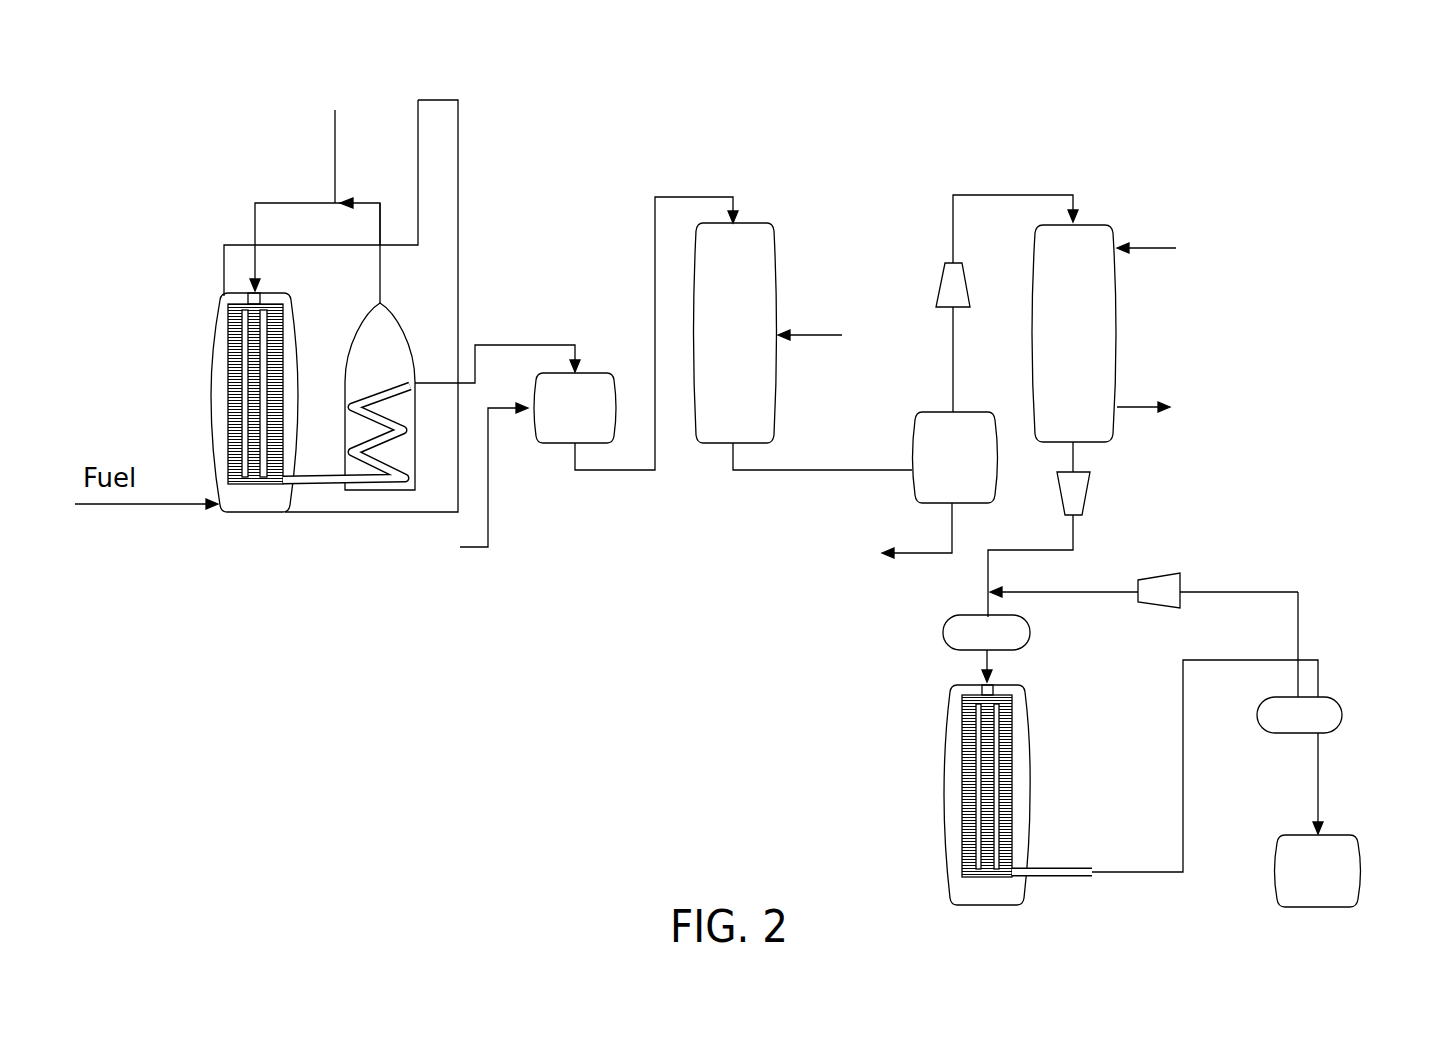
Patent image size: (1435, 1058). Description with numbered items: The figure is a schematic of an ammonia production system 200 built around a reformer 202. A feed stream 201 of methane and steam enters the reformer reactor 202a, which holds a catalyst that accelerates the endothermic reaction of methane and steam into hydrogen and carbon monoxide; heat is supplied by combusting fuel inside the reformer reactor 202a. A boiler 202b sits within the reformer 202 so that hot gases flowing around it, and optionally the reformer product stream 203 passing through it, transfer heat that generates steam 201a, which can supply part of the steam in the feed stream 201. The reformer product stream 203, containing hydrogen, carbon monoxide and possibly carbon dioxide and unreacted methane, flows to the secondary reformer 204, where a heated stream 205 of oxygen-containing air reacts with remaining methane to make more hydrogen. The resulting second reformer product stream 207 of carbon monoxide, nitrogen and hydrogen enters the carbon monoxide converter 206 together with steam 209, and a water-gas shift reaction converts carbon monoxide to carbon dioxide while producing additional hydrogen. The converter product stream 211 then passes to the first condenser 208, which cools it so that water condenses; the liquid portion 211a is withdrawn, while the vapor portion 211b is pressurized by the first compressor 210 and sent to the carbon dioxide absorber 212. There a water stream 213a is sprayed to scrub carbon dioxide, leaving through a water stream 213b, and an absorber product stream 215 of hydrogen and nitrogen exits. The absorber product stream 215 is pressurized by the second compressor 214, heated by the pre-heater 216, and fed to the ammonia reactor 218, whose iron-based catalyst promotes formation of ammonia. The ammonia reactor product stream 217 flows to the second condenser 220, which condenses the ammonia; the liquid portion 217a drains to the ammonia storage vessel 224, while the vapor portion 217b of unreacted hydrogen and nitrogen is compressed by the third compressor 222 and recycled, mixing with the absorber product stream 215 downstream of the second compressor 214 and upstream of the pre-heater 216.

The ammonia production system 200 is at (1250, 115).
The feed stream 201 is at (255, 232).
The steam 201a is at (365, 203).
The reformer 202 is at (152, 342).
The reformer reactor 202a is at (240, 513).
The boiler 202b is at (390, 493).
The reformer product stream 203 is at (317, 485).
The secondary reformer 204 is at (585, 372).
The heated stream 205 is at (470, 482).
The carbon monoxide converter 206 is at (750, 221).
The second reformer product stream 207 is at (675, 195).
The first condenser 208 is at (955, 457).
The steam 209 is at (836, 334).
The first compressor 210 is at (943, 285).
The converter product stream 211 is at (775, 472).
The liquid portion 211a is at (885, 535).
The vapor portion 211b is at (996, 194).
The carbon dioxide absorber 212 is at (1083, 222).
The water stream 213a is at (1182, 248).
The water stream 213b is at (1182, 407).
The second compressor 214 is at (1087, 497).
The absorber product stream 215 is at (1075, 458).
The pre-heater 216 is at (945, 622).
The ammonia reactor product stream 217 is at (1142, 871).
The liquid portion 217a is at (1318, 775).
The vapor portion 217b is at (1300, 622).
The ammonia reactor 218 is at (947, 753).
The second condenser 220 is at (1340, 707).
The third compressor 222 is at (1153, 605).
The ammonia storage vessel 224 is at (1318, 871).